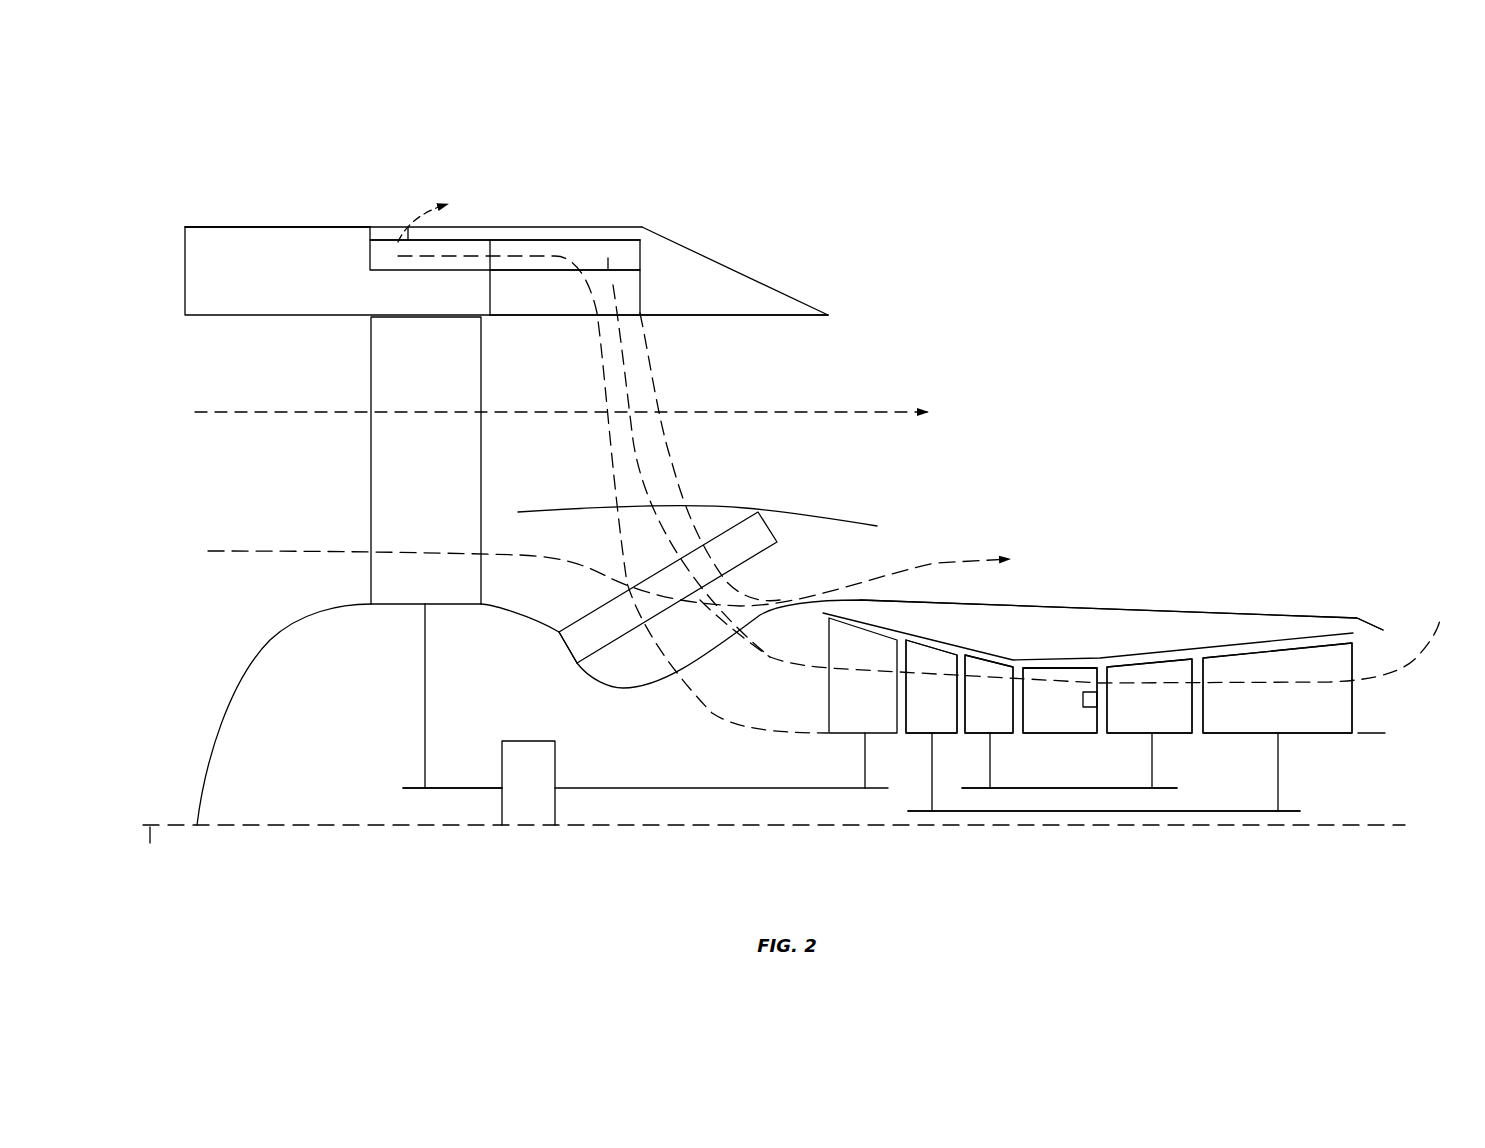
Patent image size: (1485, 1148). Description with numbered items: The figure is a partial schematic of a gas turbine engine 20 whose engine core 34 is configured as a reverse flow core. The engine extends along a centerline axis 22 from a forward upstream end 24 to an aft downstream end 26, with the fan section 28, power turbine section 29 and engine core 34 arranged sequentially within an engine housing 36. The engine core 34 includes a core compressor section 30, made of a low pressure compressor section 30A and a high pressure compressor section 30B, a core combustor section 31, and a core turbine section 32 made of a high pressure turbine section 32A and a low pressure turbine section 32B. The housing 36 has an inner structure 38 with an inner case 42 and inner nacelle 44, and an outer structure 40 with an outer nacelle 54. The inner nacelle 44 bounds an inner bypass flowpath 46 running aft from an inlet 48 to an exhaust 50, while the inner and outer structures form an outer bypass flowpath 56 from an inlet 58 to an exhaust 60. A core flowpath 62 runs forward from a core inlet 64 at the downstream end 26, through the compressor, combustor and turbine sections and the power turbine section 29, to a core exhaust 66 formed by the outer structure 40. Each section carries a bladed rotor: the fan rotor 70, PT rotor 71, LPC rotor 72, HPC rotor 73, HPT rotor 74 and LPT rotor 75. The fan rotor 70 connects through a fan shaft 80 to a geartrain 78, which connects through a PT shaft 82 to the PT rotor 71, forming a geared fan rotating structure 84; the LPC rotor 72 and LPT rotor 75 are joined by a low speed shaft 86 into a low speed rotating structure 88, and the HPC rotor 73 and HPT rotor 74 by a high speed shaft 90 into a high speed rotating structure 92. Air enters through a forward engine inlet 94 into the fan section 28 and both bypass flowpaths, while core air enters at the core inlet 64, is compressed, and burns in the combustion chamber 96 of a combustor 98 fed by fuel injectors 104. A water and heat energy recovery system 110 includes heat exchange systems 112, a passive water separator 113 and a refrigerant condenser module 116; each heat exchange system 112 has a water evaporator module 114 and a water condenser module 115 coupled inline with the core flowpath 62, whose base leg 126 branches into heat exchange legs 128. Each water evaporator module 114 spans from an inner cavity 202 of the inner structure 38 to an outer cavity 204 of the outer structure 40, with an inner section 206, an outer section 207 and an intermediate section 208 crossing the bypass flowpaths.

The gas turbine engine 20 is at (202, 120).
The centerline axis 22 is at (148, 853).
The upstream end 24 is at (185, 263).
The downstream end 26 is at (1383, 630).
The fan section 28 is at (373, 170).
The power turbine section 29 is at (838, 517).
The core compressor section 30 is at (1107, 468).
The low pressure compressor section 30A is at (1203, 517).
The high pressure compressor section 30B is at (1107, 517).
The core combustor section 31 is at (1023, 517).
The core turbine section 32 is at (907, 468).
The high pressure turbine section 32A is at (965, 517).
The low pressure turbine section 32B is at (957, 517).
The turbine engine core 34 is at (977, 850).
The engine housing 36 is at (170, 218).
The housing inner structure 38 is at (787, 508).
The housing outer structure 40 is at (285, 227).
The inner case 42 is at (1069, 660).
The inner nacelle 44 is at (713, 508).
The inner bypass flowpath 46 is at (822, 560).
The inner bypass inlet 48 is at (515, 537).
The inner bypass exhaust 50 is at (895, 552).
The outer nacelle 54 is at (233, 227).
The outer bypass flowpath 56 is at (678, 373).
The outer bypass inlet 58 is at (502, 369).
The outer bypass exhaust 60 is at (833, 365).
The core flowpath 62 is at (1155, 683).
The core inlet 64 is at (1383, 697).
The core exhaust 66 is at (398, 250).
The fan rotor 70 is at (425, 697).
The PT rotor 71 is at (865, 760).
The LPC rotor 72 is at (1278, 770).
The HPC rotor 73 is at (1152, 760).
The HPT rotor 74 is at (990, 757).
The LPT rotor 75 is at (932, 787).
The geartrain 78 is at (517, 792).
The fan shaft 80 is at (452, 790).
The PT shaft 82 is at (622, 788).
The fan rotating structure 84 is at (413, 800).
The low speed shaft 86 is at (1238, 811).
The low speed rotating structure 88 is at (1273, 822).
The high speed shaft 90 is at (1125, 788).
The high speed rotating structure 92 is at (1073, 798).
The forward engine inlet 94 is at (183, 371).
The combustion chamber 96 is at (1038, 724).
The combustor 98 is at (1048, 668).
The fuel injector 104 is at (1090, 707).
The water and heat energy recovery system 110 is at (680, 285).
The heat exchange system 112 is at (648, 278).
The passive water separator 113 is at (549, 227).
The water evaporator module 114 is at (710, 712).
The water condenser module 115 is at (608, 258).
The refrigerant condenser module 116 is at (560, 653).
The base leg 126 is at (1240, 683).
The heat exchange leg 128 is at (770, 657).
The inner cavity 202 is at (577, 733).
The outer cavity 204 is at (707, 307).
The inner section 206 is at (717, 715).
The outer section 207 is at (532, 305).
The intermediate section 208 is at (672, 462).